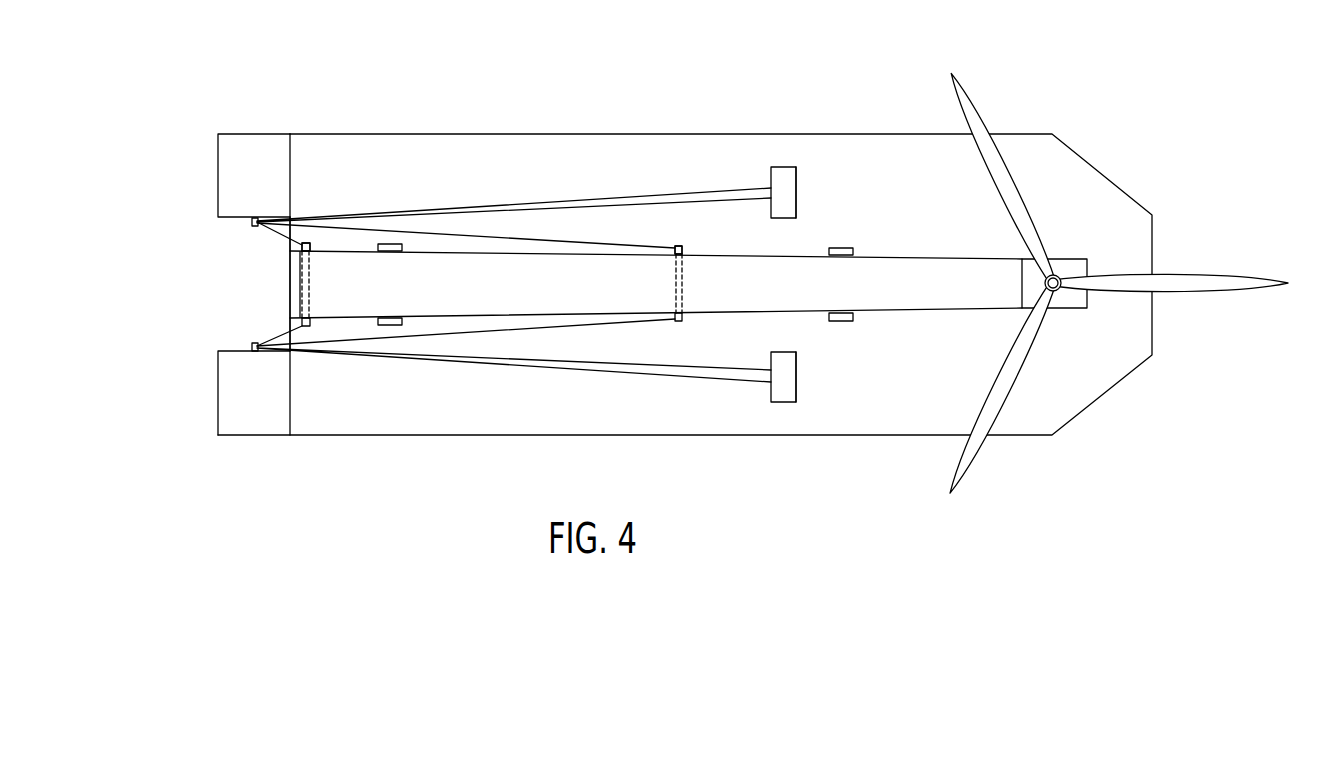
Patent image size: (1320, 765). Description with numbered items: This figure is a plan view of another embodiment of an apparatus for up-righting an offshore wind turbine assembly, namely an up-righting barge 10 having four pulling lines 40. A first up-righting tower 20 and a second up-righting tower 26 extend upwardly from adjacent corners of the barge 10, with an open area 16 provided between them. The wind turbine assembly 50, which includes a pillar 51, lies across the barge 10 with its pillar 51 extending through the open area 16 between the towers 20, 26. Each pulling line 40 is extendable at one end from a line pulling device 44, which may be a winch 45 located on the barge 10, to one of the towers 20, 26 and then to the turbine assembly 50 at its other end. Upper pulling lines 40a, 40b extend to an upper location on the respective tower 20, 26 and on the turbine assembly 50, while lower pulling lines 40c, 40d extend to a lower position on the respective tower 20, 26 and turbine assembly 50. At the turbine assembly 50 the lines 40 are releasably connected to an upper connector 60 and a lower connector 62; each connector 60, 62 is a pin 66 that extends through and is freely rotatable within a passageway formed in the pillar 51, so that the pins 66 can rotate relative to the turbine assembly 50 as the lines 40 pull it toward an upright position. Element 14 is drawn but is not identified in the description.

The up-righting barge 10 is at (880, 130).
The tower support cradle 14 is at (395, 245).
The open area 16 is at (268, 295).
The first up-righting tower 20 is at (260, 133).
The second up-righting tower 26 is at (255, 437).
The pulling line 40 is at (573, 199).
The upper pulling line 40a is at (583, 240).
The upper pulling line 40b is at (582, 327).
The lower pulling line 40c is at (268, 230).
The lower pulling line 40d is at (272, 342).
The line pulling device 44 is at (777, 166).
The winch 45 is at (795, 198).
The wind turbine assembly 50 is at (872, 311).
The pillar 51 is at (433, 293).
The upper connector 60 is at (684, 323).
The lower connector 62 is at (309, 331).
The pin 66 is at (308, 242).